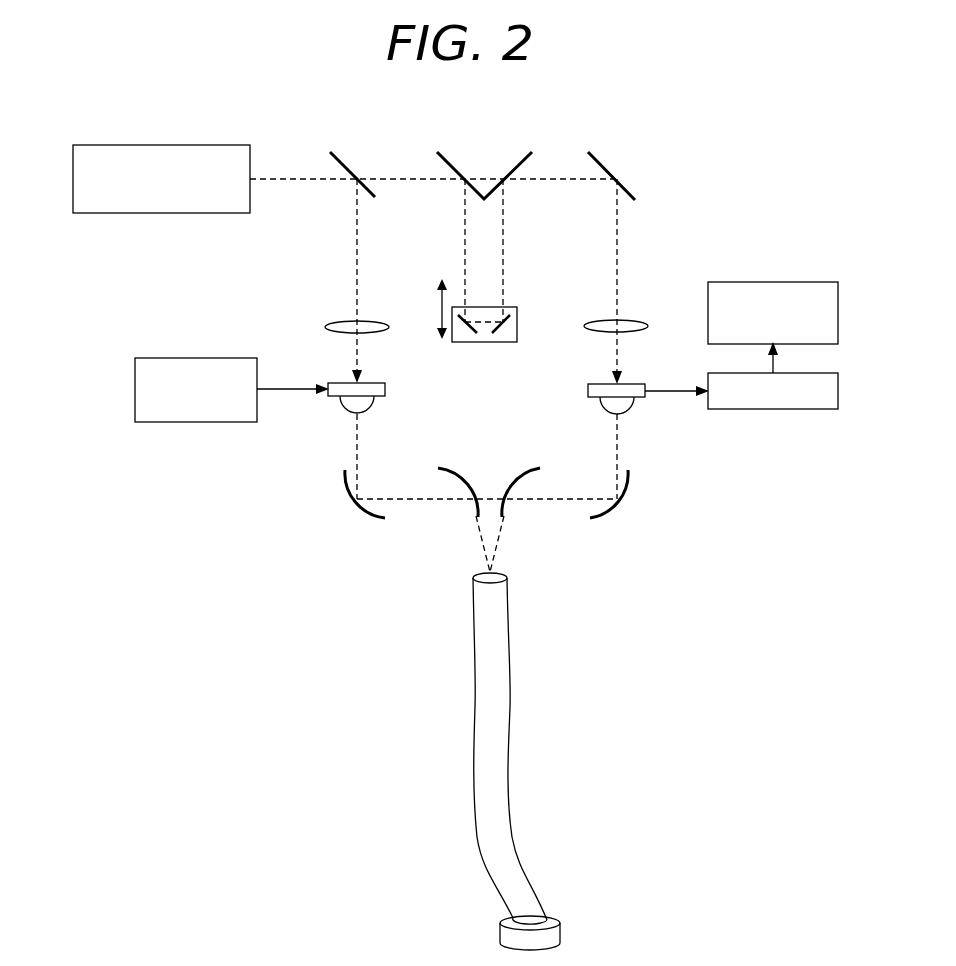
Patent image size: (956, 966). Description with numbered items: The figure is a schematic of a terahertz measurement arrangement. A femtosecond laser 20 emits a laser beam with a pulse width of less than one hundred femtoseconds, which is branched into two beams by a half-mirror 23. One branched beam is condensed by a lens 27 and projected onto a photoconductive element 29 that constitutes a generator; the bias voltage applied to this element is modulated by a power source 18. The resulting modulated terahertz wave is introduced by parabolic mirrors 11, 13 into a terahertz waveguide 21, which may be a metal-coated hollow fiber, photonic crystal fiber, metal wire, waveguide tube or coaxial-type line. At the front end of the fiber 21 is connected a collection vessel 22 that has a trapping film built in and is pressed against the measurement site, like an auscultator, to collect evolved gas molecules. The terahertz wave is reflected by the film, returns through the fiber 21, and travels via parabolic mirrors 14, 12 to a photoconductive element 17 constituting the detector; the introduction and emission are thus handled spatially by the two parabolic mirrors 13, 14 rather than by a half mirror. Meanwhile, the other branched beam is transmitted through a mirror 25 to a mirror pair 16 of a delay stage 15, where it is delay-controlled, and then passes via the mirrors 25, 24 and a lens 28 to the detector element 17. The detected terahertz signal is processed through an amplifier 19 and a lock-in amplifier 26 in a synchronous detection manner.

The parabolic mirror 11 is at (365, 516).
The parabolic mirror 12 is at (612, 511).
The parabolic mirror 13 is at (455, 478).
The parabolic mirror 14 is at (527, 475).
The delay stage 15 is at (458, 342).
The mirror pair 16 is at (498, 342).
The photoconductive element 17 is at (636, 408).
The power source 18 is at (185, 422).
The amplifier 19 is at (765, 409).
The femtosecond laser 20 is at (178, 145).
The terahertz waveguide 21 is at (473, 705).
The collection vessel 22 is at (562, 928).
The half-mirror 23 is at (355, 150).
The mirror 24 is at (604, 150).
The mirror 25 is at (452, 150).
The lock-in amplifier 26 is at (800, 282).
The lens 27 is at (325, 327).
The lens 28 is at (634, 320).
The photoconductive element 29 is at (342, 411).